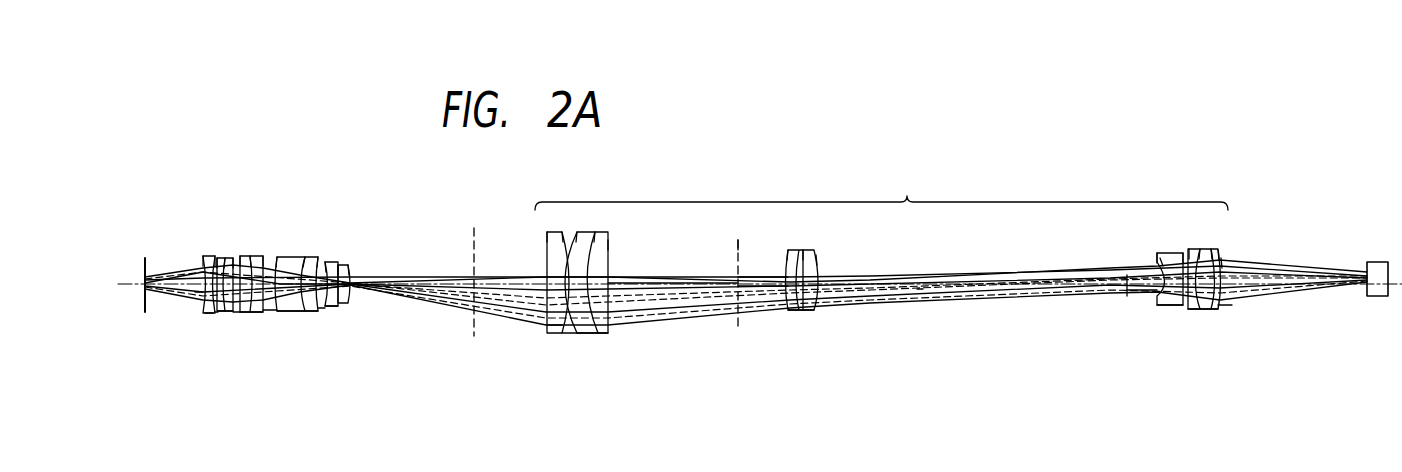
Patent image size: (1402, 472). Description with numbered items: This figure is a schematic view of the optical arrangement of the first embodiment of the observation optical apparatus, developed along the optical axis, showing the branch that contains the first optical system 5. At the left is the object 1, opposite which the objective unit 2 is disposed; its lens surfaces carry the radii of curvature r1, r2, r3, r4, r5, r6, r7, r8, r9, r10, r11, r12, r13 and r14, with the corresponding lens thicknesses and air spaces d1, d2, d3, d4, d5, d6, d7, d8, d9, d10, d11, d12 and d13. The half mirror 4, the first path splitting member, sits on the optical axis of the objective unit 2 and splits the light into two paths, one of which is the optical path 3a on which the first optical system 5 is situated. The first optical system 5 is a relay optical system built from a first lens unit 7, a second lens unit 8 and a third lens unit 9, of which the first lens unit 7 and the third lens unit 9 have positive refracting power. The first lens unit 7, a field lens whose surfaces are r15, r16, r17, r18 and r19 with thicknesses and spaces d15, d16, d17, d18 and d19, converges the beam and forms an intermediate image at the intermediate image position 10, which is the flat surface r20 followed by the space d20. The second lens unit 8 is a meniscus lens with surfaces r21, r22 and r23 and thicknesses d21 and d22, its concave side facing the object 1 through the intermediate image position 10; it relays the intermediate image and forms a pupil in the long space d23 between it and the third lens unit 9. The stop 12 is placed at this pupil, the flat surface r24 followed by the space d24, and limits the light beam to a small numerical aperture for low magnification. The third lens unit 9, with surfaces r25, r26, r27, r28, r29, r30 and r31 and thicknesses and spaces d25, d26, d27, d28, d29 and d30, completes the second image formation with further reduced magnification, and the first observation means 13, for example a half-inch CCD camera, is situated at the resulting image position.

The object 1 is at (145, 260).
The objective unit 2 is at (360, 210).
The optical path 3a is at (745, 284).
The half mirror 4 is at (474, 228).
The first optical system 5 is at (881, 190).
The first lens unit 7 is at (618, 347).
The second lens unit 8 is at (830, 347).
The third lens unit 9 is at (1225, 347).
The intermediate image position 10 is at (736, 243).
The stop 12 is at (1128, 260).
The first observation means 13 is at (1375, 262).
The radius of curvature of lens surface r1 is at (203, 256).
The radius of curvature of lens surface r2 is at (215, 256).
The radius of curvature of lens surface r3 is at (218, 258).
The radius of curvature of lens surface r4 is at (225, 258).
The radius of curvature of lens surface r5 is at (233, 258).
The radius of curvature of lens surface r6 is at (240, 256).
The radius of curvature of lens surface r7 is at (250, 256).
The radius of curvature of lens surface r8 is at (263, 256).
The radius of curvature of lens surface r9 is at (277, 257).
The radius of curvature of lens surface r10 is at (305, 257).
The radius of curvature of lens surface r11 is at (318, 257).
The radius of curvature of lens surface r12 is at (325, 262).
The radius of curvature of lens surface r13 is at (338, 265).
The radius of curvature of lens surface r14 is at (349, 265).
The radius of curvature of lens surface r15 is at (547, 236).
The radius of curvature of lens surface r16 is at (562, 232).
The radius of curvature of lens surface r17 is at (577, 232).
The radius of curvature of lens surface r18 is at (595, 232).
The radius of curvature of lens surface r19 is at (608, 240).
The radius of curvature of lens surface r20 is at (738, 240).
The radius of curvature of lens surface r21 is at (789, 250).
The radius of curvature of lens surface r22 is at (804, 250).
The radius of curvature of lens surface r23 is at (817, 260).
The radius of curvature of lens surface r24 is at (1157, 253).
The radius of curvature of lens surface r25 is at (1161, 258).
The radius of curvature of lens surface r26 is at (1183, 253).
The radius of curvature of lens surface r27 is at (1189, 249).
The radius of curvature of lens surface r28 is at (1200, 249).
The radius of curvature of lens surface r29 is at (1211, 249).
The radius of curvature of lens surface r30 is at (1218, 250).
The radius of curvature of lens surface r31 is at (1221, 260).
The lens thickness or space d1 is at (200, 292).
The lens thickness or space d2 is at (209, 313).
The lens thickness or space d3 is at (216, 312).
The lens thickness or space d4 is at (221, 311).
The lens thickness or space d5 is at (229, 311).
The lens thickness or space d6 is at (237, 312).
The lens thickness or space d7 is at (245, 312).
The lens thickness or space d8 is at (256, 312).
The lens thickness or space d9 is at (270, 310).
The lens thickness or space d10 is at (290, 311).
The lens thickness or space d11 is at (310, 311).
The lens thickness or space d12 is at (321, 308).
The lens thickness or space d13 is at (331, 306).
The lens thickness or space d15 is at (553, 325).
The lens thickness or space d16 is at (568, 333).
The lens thickness or space d17 is at (590, 322).
The lens thickness or space d18 is at (604, 330).
The lens thickness or space d19 is at (662, 284).
The lens thickness or space d20 is at (765, 286).
The lens thickness or space d21 is at (795, 310).
The lens thickness or space d22 is at (810, 310).
The lens thickness or space d23 is at (920, 290).
The lens thickness or space d24 is at (1145, 290).
The lens thickness or space d25 is at (1165, 305).
The lens thickness or space d26 is at (1178, 305).
The lens thickness or space d27 is at (1192, 309).
The lens thickness or space d28 is at (1203, 309).
The lens thickness or space d29 is at (1213, 309).
The lens thickness or space d30 is at (1223, 305).